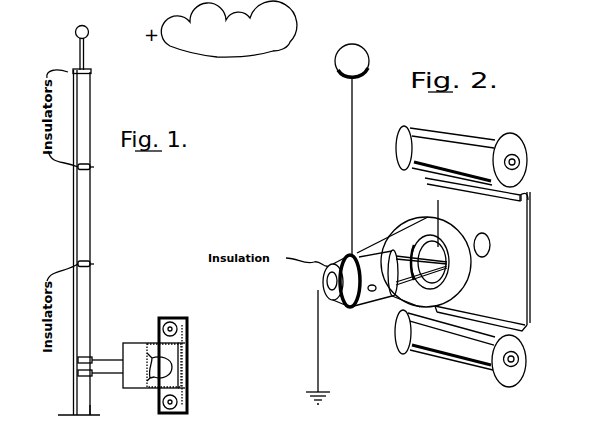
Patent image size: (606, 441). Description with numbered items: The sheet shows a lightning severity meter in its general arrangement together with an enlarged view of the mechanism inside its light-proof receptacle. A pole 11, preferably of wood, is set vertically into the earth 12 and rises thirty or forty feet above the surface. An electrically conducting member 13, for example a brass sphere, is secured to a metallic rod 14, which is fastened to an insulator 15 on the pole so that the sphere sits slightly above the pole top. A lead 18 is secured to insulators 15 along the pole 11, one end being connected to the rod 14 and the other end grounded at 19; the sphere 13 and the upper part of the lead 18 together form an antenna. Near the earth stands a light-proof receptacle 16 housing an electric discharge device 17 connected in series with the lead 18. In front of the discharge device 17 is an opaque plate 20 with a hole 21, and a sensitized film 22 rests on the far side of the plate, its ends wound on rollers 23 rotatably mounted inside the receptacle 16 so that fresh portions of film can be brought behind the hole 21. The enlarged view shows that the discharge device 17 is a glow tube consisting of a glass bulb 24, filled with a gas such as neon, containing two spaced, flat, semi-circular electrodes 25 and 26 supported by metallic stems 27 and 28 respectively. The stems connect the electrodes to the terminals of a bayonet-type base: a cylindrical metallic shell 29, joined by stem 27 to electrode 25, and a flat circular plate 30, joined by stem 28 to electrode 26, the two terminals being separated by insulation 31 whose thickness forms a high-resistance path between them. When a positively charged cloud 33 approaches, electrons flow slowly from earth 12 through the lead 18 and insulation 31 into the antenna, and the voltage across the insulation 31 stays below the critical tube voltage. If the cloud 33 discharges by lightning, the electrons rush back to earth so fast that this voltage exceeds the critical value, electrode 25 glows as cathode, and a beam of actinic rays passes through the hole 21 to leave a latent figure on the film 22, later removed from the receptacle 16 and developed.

In FIG. 1, the pole 11 is at (73, 137).
In FIG. 1, the earth 12 is at (63, 413).
In FIG. 1, the electrically conducting member 13 is at (100, 32).
In FIG. 2, the electrically conducting member 13 is at (336, 61).
In FIG. 1, the metallic rod 14 is at (80, 54).
In FIG. 1, the insulator 15 is at (74, 72).
In FIG. 1, the light-proof receptacle 16 is at (136, 345).
In FIG. 1, the electric discharge device 17 is at (150, 409).
In FIG. 2, the electric discharge device 17 is at (394, 200).
In FIG. 1, the lead 18 is at (92, 201).
In FIG. 2, the lead 18 is at (352, 121).
In FIG. 1, the ground 19 is at (91, 415).
In FIG. 2, the ground 19 is at (329, 396).
In FIG. 1, the opaque plate 20 is at (181, 347).
In FIG. 2, the opaque plate 20 is at (527, 256).
In FIG. 1, the hole 21 is at (181, 362).
In FIG. 2, the hole 21 is at (491, 243).
In FIG. 1, the sensitized film 22 is at (181, 386).
In FIG. 2, the sensitized film 22 is at (527, 186).
In FIG. 1, the rollers 23 is at (172, 322).
In FIG. 2, the rollers 23 is at (514, 143).
In FIG. 2, the glass bulb 24 is at (427, 228).
In FIG. 2, the electrode 25 is at (417, 238).
In FIG. 2, the electrode 26 is at (402, 300).
In FIG. 2, the metallic stem 27 is at (404, 241).
In FIG. 2, the metallic stem 28 is at (382, 303).
In FIG. 2, the cylindrical metallic shell 29 is at (351, 259).
In FIG. 2, the flat circular plate 30 is at (326, 280).
In FIG. 2, the insulation 31 is at (331, 270).
In FIG. 1, the positively charged cloud 33 is at (220, 50).